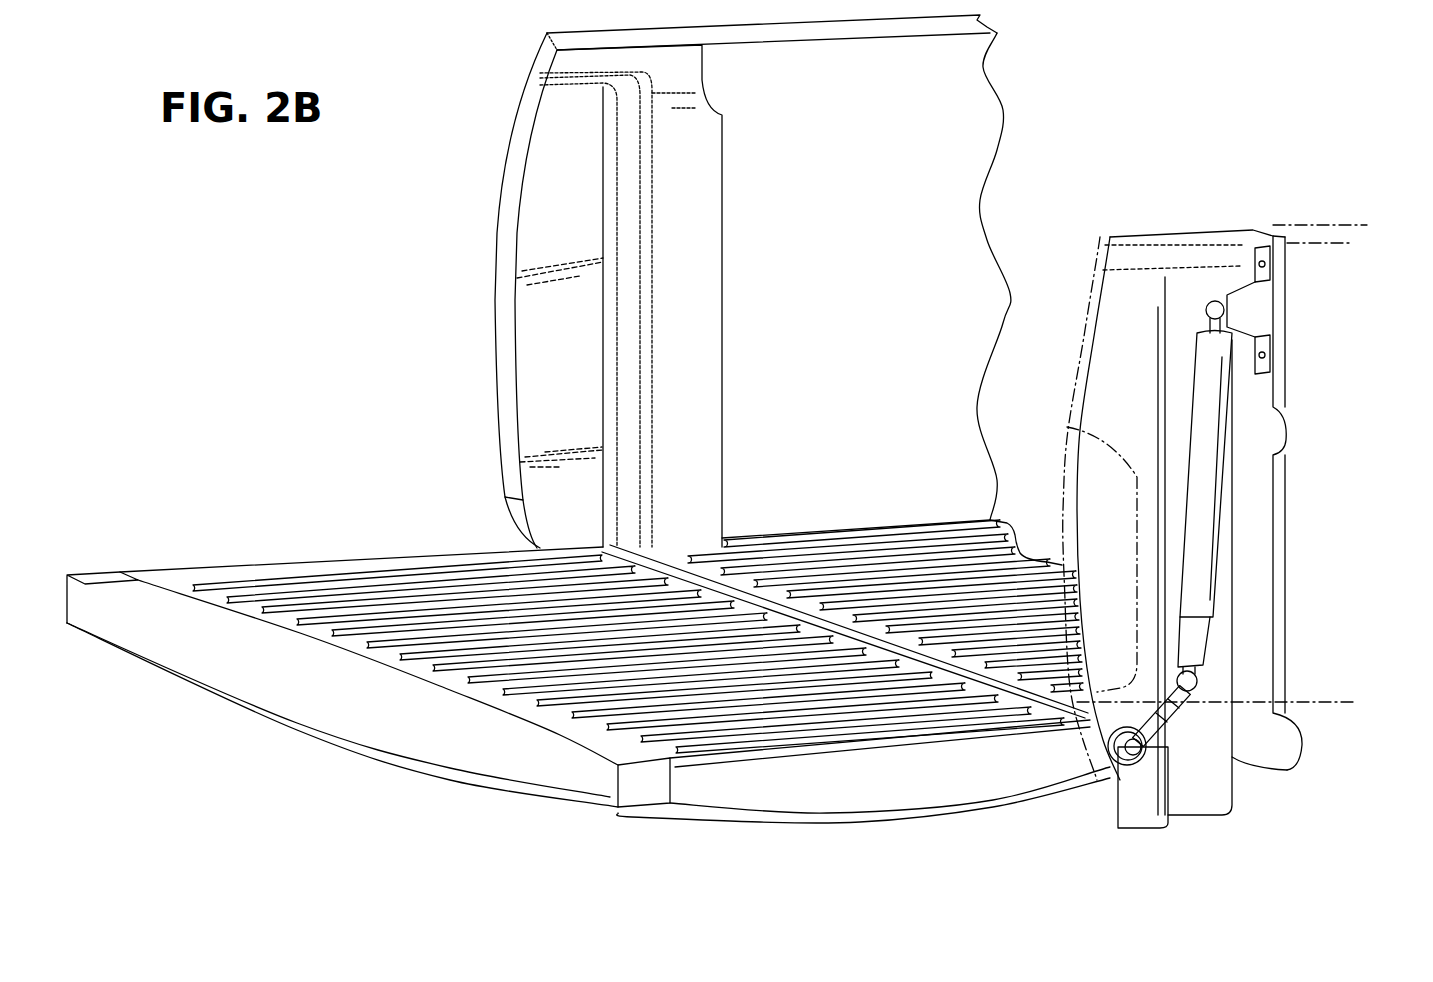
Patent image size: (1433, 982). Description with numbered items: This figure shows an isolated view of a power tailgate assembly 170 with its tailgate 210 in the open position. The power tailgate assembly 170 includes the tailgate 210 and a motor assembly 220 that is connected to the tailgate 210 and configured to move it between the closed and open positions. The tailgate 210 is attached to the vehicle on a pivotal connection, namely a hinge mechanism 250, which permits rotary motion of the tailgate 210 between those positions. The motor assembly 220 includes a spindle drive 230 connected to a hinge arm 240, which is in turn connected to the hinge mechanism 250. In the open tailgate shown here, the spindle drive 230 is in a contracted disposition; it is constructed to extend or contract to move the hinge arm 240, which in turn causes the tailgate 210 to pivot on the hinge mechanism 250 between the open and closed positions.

The power tailgate assembly 170 is at (768, 912).
The tailgate 210 is at (853, 820).
The motor assembly 220 is at (1353, 807).
The spindle drive 230 is at (1210, 385).
The hinge arm 240 is at (1200, 713).
The hinge mechanism 250 is at (1117, 780).